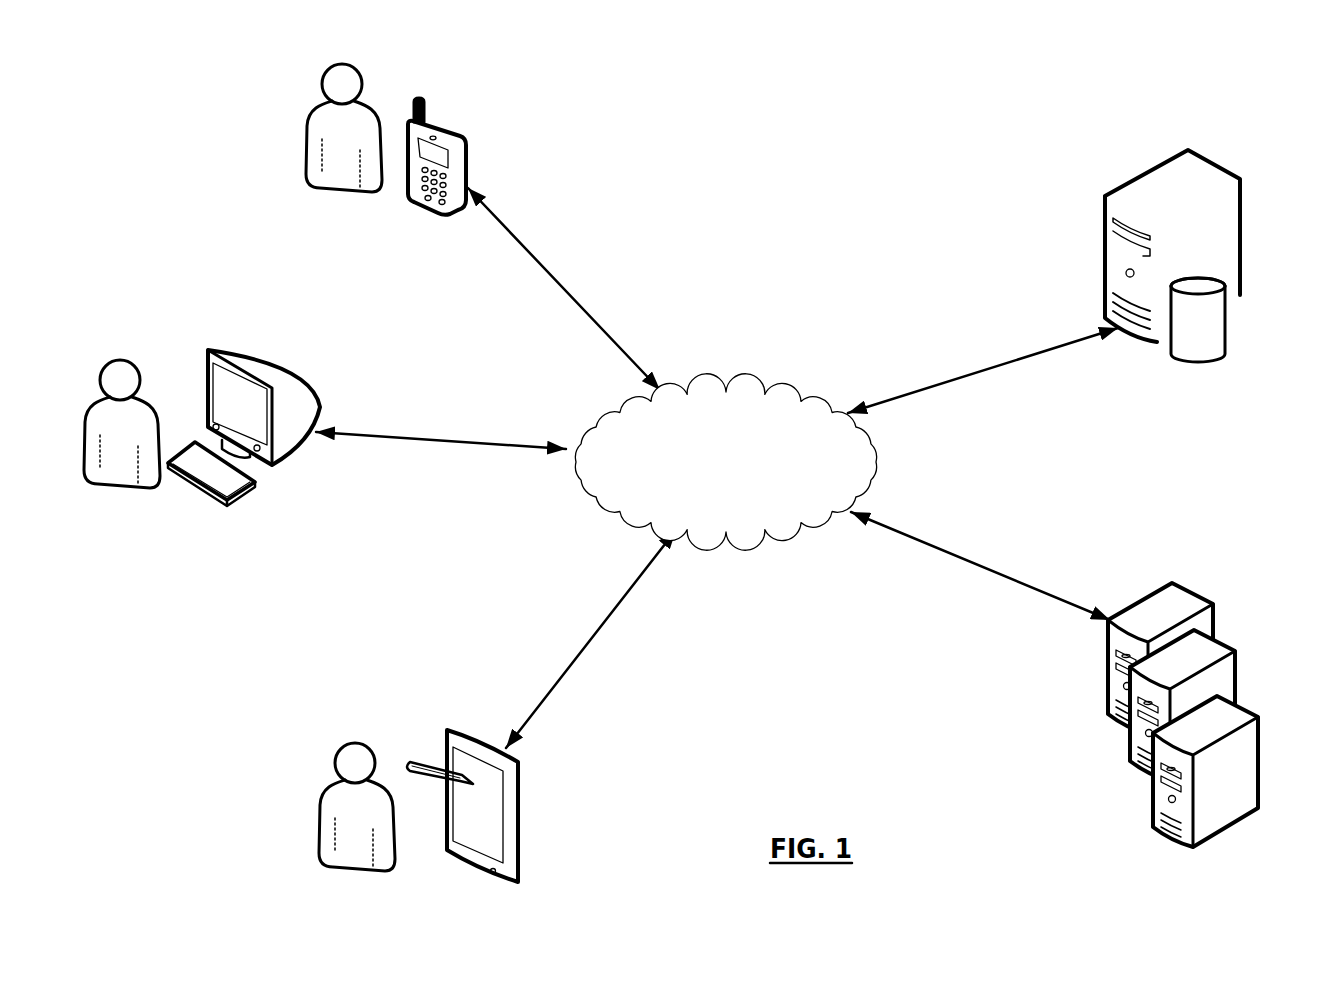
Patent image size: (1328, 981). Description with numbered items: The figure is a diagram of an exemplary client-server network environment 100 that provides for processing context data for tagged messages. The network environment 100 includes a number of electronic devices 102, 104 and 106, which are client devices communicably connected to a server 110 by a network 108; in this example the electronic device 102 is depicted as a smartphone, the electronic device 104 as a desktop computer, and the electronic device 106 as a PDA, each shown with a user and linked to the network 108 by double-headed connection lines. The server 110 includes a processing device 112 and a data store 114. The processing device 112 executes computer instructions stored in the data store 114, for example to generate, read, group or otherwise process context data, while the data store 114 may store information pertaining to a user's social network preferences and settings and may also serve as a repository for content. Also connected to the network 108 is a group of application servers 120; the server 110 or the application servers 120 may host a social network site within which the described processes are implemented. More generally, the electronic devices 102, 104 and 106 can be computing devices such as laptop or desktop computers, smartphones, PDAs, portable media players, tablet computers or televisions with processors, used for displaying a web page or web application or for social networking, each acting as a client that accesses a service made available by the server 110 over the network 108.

The network environment 100 is at (855, 112).
The electronic device 102 is at (450, 128).
The electronic device 104 is at (282, 362).
The electronic device 106 is at (457, 727).
The network 108 is at (724, 390).
The server 110 is at (1105, 369).
The processing device 112 is at (1213, 162).
The data store 114 is at (1227, 342).
The application servers 120 is at (1100, 813).